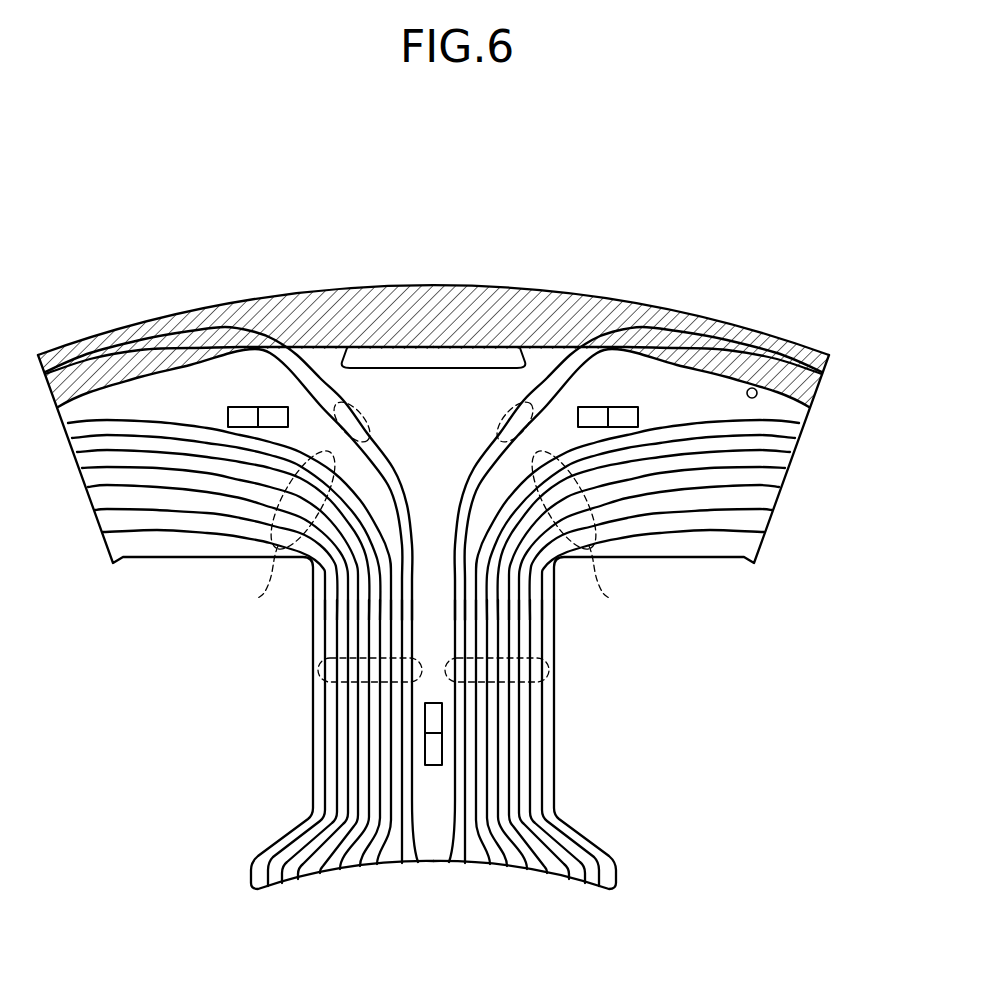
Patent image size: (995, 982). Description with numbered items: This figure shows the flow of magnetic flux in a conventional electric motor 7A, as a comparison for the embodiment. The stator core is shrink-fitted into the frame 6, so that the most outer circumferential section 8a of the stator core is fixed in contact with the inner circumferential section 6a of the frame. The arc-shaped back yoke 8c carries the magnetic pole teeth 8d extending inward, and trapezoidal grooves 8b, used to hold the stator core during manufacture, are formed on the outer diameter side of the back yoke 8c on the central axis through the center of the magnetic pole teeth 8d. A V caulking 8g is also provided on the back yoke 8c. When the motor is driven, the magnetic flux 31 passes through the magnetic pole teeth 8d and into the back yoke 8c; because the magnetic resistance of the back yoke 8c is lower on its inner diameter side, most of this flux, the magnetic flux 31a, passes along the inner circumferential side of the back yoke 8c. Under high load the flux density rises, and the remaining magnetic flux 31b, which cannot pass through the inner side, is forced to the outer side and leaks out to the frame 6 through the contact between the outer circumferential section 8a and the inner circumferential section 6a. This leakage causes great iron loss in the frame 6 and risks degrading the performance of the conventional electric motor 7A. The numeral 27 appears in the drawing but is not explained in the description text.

The conventional electric motor 7A is at (607, 195).
The frame 6 is at (687, 333).
The inner circumferential section of the frame 6a is at (757, 388).
The insulator 27 is at (147, 390).
The outer circumferential section of the stator core 8a is at (660, 345).
The grooves 8b is at (363, 343).
The back yoke 8c is at (765, 500).
The magnetic pole teeth 8d is at (538, 732).
The caulking 8g is at (243, 405).
The magnetic flux 31 is at (318, 668).
The magnetic flux passing through the inner circumferential side 31a is at (434, 534).
The leakage magnetic flux 31b is at (350, 403).